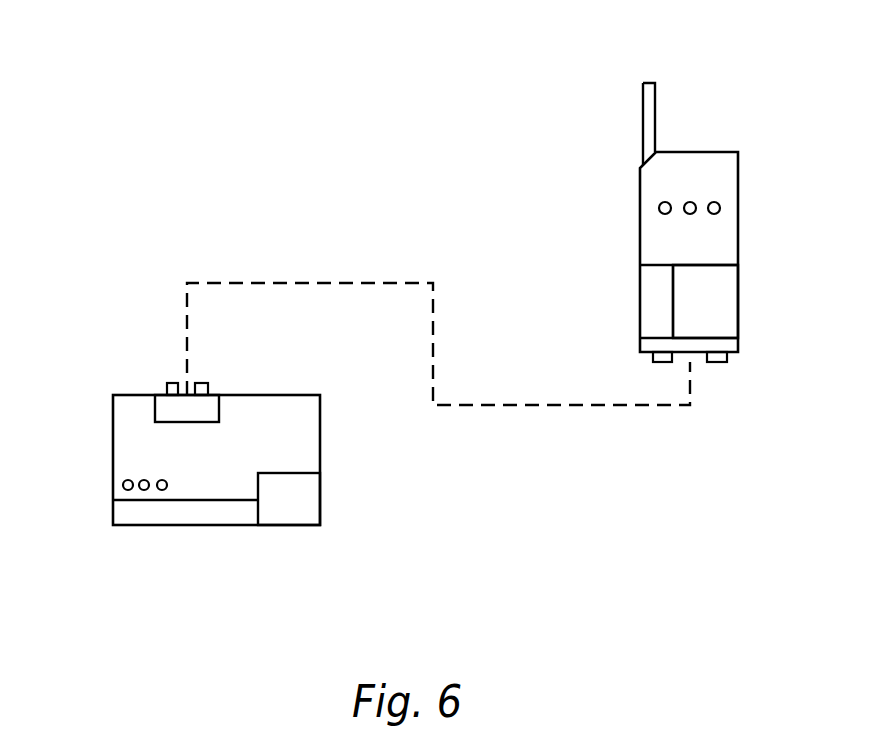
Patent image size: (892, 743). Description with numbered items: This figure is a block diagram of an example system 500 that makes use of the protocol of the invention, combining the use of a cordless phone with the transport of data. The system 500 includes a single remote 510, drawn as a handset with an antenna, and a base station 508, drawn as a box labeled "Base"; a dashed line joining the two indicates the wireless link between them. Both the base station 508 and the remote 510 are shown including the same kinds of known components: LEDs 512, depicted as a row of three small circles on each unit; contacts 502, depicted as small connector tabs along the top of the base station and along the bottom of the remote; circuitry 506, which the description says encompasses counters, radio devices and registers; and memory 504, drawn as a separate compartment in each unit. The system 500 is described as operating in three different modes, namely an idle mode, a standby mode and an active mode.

The system 500 is at (400, 105).
The contacts 502 is at (170, 383).
The memory 504 is at (316, 500).
The circuitry 506 is at (193, 516).
The base station 508 is at (318, 411).
The remote 510 is at (738, 157).
The LEDs 512 is at (123, 485).